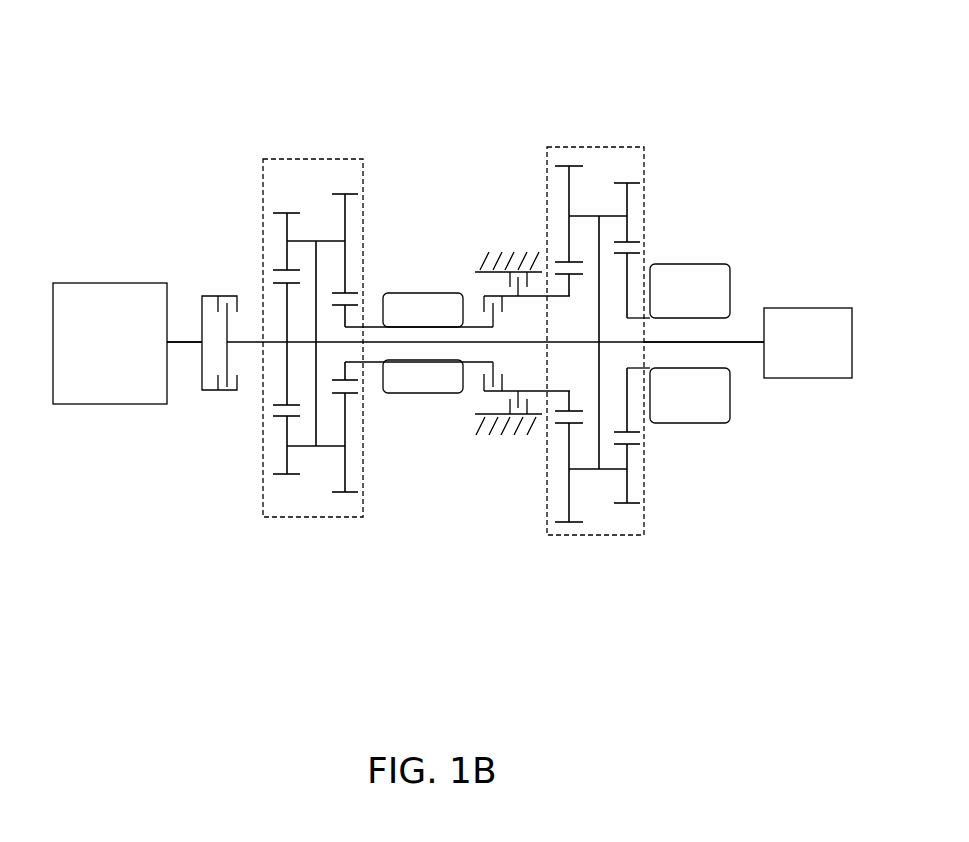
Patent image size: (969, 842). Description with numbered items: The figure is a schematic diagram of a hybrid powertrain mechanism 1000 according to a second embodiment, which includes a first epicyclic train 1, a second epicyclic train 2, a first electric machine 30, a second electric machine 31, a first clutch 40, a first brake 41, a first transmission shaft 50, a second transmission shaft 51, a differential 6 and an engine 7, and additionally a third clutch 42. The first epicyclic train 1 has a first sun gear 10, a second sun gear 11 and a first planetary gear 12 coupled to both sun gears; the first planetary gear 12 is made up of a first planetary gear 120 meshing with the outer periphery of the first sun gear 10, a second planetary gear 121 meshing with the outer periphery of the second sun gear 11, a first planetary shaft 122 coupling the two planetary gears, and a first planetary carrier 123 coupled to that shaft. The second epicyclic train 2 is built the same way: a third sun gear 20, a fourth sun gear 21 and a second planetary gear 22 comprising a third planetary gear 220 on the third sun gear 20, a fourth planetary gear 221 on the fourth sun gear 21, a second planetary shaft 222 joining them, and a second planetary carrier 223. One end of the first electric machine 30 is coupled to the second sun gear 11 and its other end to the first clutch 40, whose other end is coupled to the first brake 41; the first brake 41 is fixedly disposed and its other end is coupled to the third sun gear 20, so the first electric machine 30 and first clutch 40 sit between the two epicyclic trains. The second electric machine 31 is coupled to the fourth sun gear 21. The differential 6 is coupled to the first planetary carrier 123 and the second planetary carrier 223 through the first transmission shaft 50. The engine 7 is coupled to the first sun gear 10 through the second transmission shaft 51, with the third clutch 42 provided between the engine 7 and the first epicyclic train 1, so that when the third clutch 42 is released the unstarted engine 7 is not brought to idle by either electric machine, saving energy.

The hybrid powertrain mechanism 1000 is at (790, 67).
The first epicyclic train 1 is at (311, 518).
The first sun gear 10 is at (286, 308).
The second sun gear 11 is at (348, 315).
The first planetary gear 12 is at (230, 120).
The first planetary gear 120 is at (286, 222).
The second planetary gear 121 is at (347, 208).
The first planetary shaft 122 is at (300, 240).
The first planetary carrier 123 is at (320, 240).
The second epicyclic train 2 is at (594, 536).
The third sun gear 20 is at (566, 400).
The fourth sun gear 21 is at (629, 422).
The second planetary gear 22 is at (687, 99).
The third planetary gear 220 is at (568, 190).
The fourth planetary gear 221 is at (630, 195).
The second planetary shaft 222 is at (585, 216).
The second planetary carrier 223 is at (600, 222).
The first electric machine 30 is at (427, 400).
The second electric machine 31 is at (693, 428).
The first clutch 40 is at (478, 291).
The first brake 41 is at (539, 268).
The third clutch 42 is at (226, 397).
The first transmission shaft 50 is at (746, 342).
The second transmission shaft 51 is at (183, 346).
The differential 6 is at (805, 386).
The engine 7 is at (108, 412).